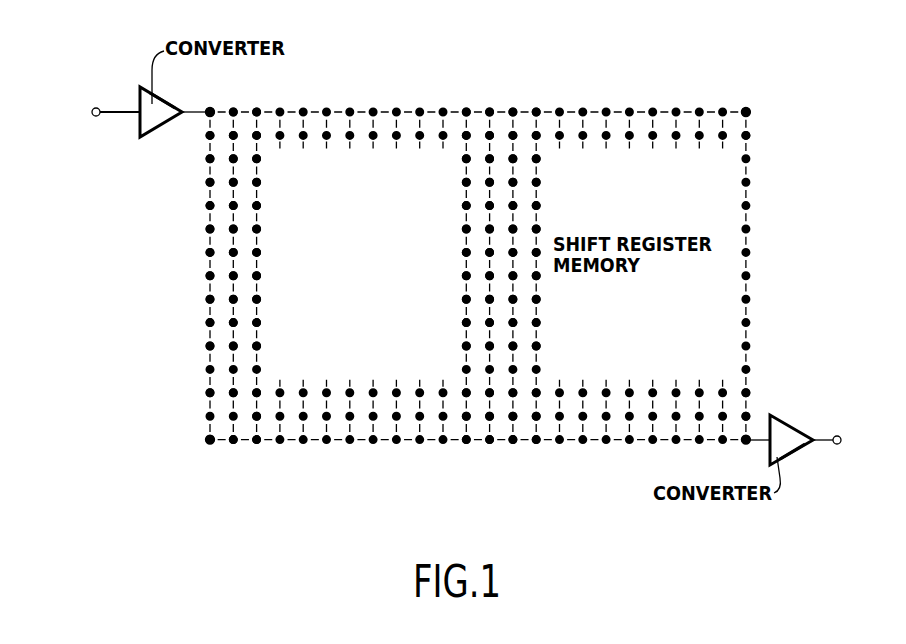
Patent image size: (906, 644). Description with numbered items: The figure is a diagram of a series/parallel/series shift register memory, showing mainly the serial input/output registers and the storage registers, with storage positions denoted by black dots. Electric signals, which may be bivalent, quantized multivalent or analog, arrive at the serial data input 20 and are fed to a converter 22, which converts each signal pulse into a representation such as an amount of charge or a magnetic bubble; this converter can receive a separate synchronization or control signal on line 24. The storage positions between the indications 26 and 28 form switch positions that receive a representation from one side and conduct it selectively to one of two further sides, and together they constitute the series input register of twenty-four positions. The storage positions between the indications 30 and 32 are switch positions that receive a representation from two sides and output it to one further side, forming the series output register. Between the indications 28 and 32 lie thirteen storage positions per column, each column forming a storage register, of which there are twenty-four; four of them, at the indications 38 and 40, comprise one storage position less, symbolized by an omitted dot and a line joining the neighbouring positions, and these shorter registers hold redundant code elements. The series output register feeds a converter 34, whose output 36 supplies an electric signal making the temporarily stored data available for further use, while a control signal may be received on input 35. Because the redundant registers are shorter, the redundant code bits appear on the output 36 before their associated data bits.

The serial data input 20 is at (98, 106).
The converter 22 is at (163, 128).
The line 24 is at (165, 92).
The indication 26 is at (213, 107).
The indication 28 is at (746, 104).
The indication 30 is at (211, 446).
The indication 32 is at (743, 447).
The converter 34 is at (792, 423).
The input 35 is at (793, 462).
The output 36 is at (837, 434).
The indication 38 is at (195, 502).
The indication 40 is at (528, 502).